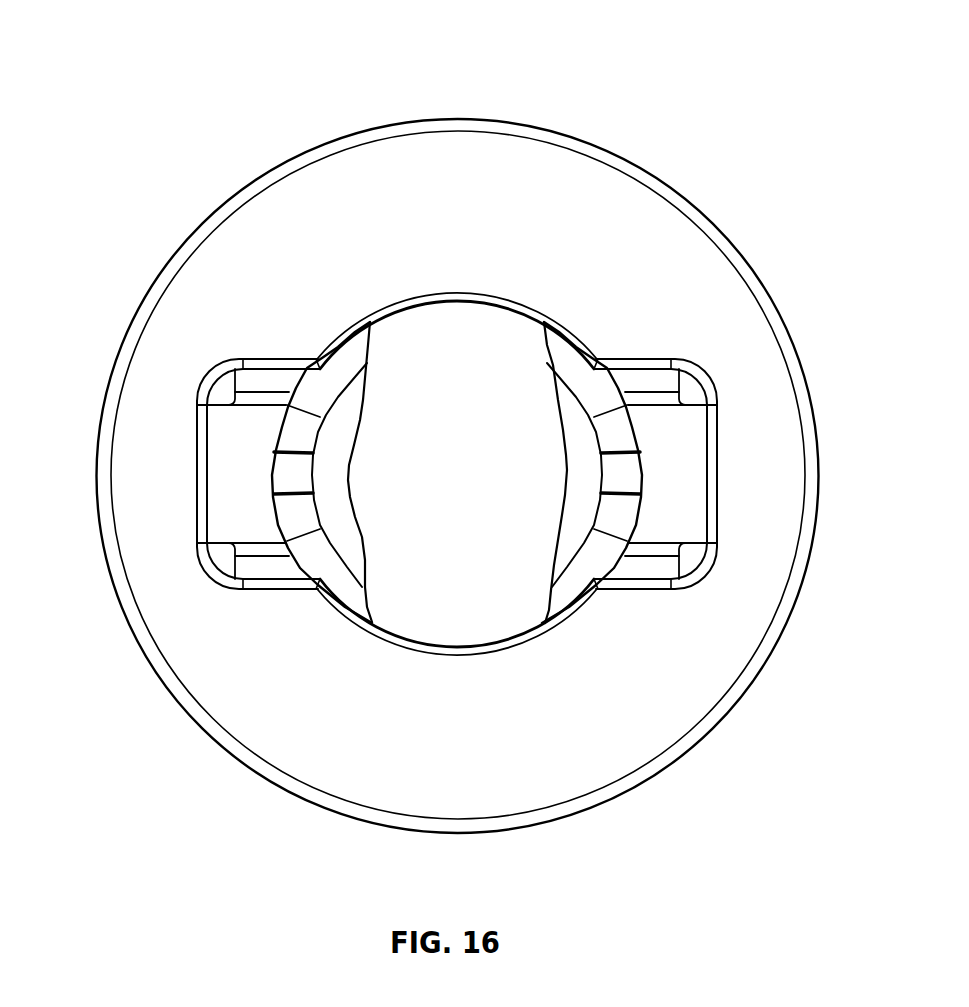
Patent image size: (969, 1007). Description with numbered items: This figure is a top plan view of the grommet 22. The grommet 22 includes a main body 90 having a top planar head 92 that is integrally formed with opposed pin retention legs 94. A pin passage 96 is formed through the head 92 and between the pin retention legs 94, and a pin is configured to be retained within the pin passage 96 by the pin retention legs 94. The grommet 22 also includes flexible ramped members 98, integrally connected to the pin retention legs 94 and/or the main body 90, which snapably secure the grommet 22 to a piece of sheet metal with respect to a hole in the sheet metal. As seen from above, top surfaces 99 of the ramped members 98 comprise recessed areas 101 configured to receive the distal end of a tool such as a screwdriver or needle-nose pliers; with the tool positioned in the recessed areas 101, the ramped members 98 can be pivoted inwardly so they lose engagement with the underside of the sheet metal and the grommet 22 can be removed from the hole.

The grommet 22 is at (185, 98).
The main body 90 is at (703, 210).
The top planar head 92 is at (438, 157).
The pin retention legs 94 is at (365, 393).
The pin passage 96 is at (423, 453).
The flexible ramped members 98 is at (225, 508).
The top surfaces 99 is at (210, 473).
The recessed areas 101 is at (240, 486).